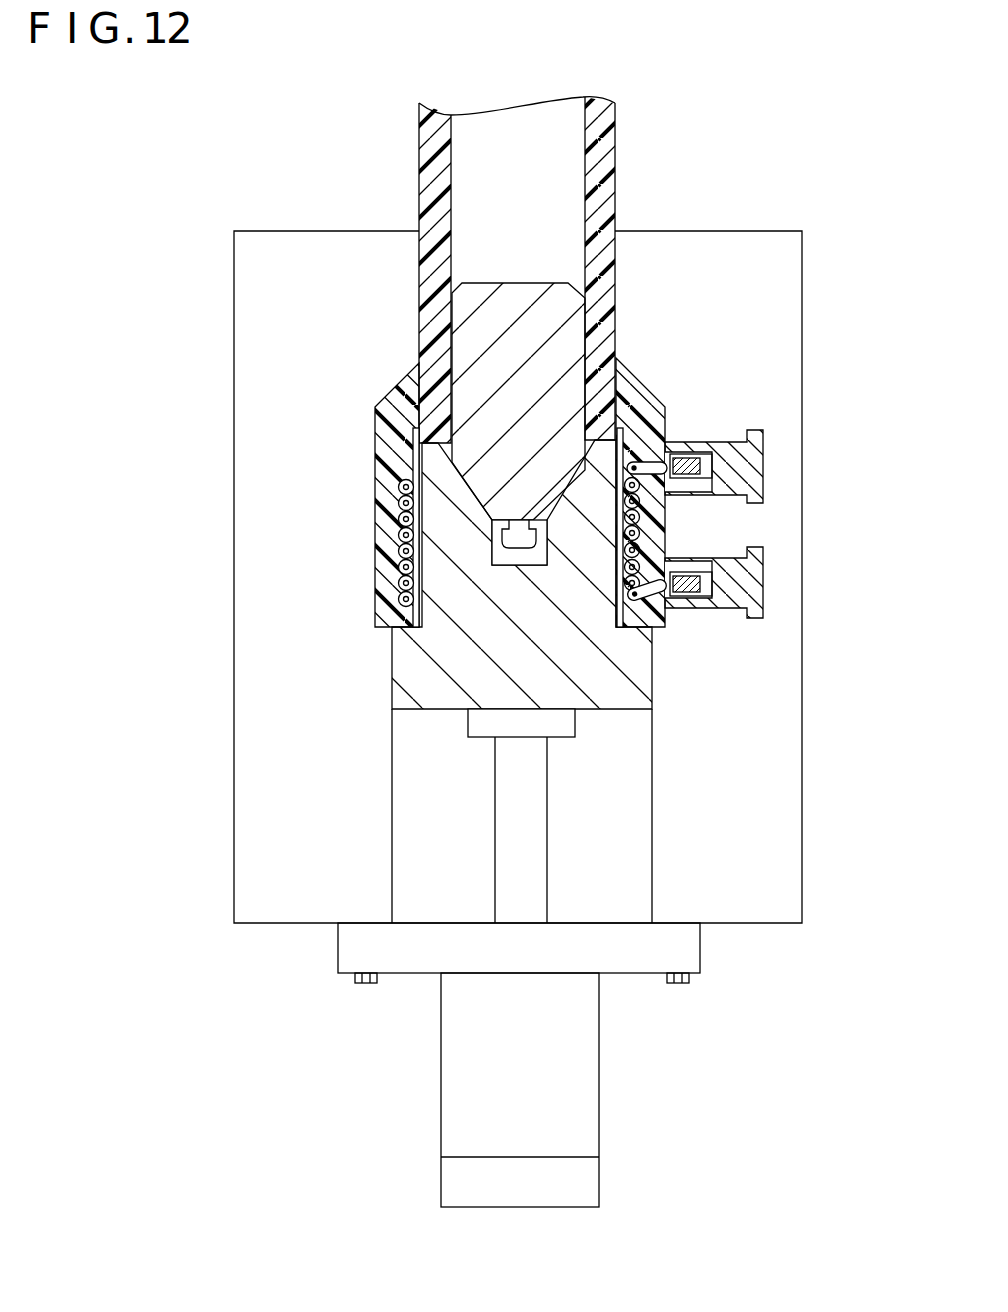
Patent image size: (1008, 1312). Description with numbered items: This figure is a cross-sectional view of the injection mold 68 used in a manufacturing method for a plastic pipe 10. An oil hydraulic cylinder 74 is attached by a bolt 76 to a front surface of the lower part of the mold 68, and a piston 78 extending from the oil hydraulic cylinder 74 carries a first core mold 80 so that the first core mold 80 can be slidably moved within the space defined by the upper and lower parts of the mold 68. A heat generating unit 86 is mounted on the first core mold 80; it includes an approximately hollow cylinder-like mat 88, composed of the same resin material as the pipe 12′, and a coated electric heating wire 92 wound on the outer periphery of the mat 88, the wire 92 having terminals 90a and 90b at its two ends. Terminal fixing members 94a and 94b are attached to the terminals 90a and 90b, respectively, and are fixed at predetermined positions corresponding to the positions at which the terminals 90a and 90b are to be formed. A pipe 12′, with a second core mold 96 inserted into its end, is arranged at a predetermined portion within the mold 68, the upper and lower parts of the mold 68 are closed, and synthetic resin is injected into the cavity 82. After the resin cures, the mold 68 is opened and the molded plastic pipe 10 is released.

The plastic pipe 10 is at (379, 174).
The pipe 12′ is at (598, 157).
The injection mold 68 is at (186, 289).
The oil hydraulic cylinder 74 is at (578, 1132).
The bolt 76 is at (364, 985).
The piston 78 is at (532, 847).
The first core mold 80 is at (430, 668).
The cavity 82 is at (655, 395).
The heat generating unit 86 is at (398, 458).
The mat 88 is at (374, 407).
The terminal 90a is at (695, 468).
The terminal 90b is at (702, 596).
The coated electric heating wire 92 is at (398, 535).
The terminal fixing member 94a is at (748, 473).
The terminal fixing member 94b is at (762, 590).
The second core mold 96 is at (570, 360).